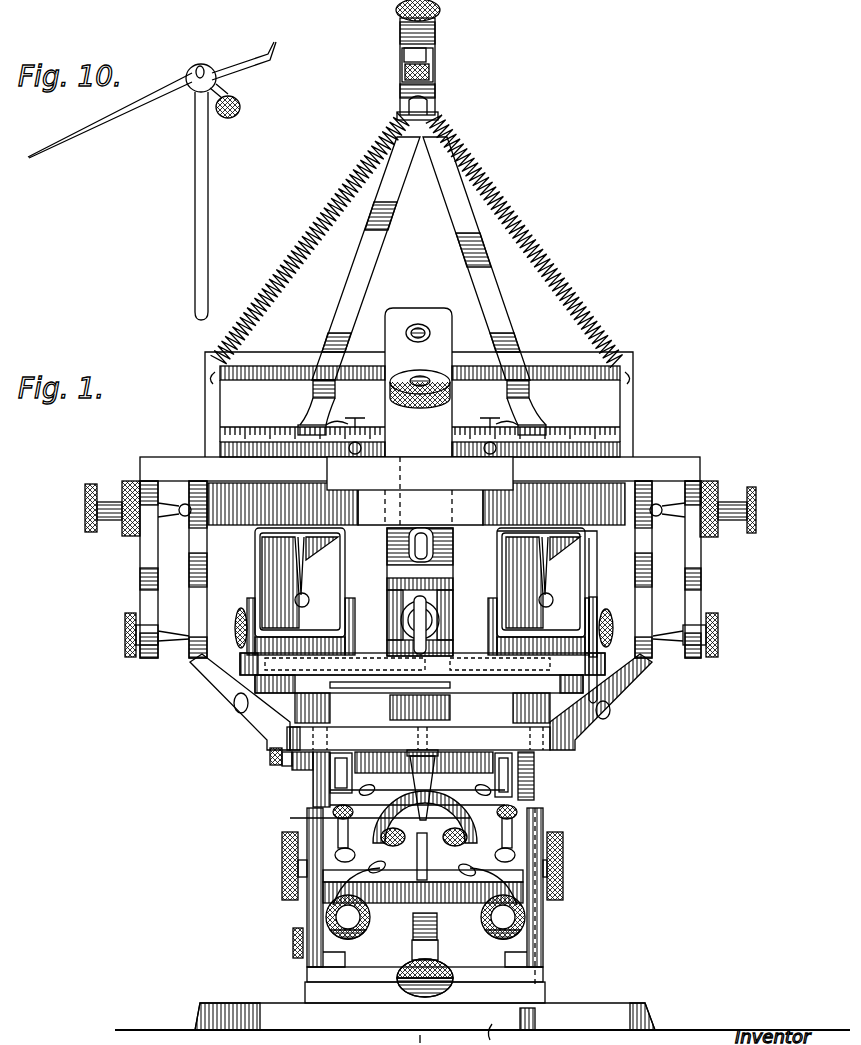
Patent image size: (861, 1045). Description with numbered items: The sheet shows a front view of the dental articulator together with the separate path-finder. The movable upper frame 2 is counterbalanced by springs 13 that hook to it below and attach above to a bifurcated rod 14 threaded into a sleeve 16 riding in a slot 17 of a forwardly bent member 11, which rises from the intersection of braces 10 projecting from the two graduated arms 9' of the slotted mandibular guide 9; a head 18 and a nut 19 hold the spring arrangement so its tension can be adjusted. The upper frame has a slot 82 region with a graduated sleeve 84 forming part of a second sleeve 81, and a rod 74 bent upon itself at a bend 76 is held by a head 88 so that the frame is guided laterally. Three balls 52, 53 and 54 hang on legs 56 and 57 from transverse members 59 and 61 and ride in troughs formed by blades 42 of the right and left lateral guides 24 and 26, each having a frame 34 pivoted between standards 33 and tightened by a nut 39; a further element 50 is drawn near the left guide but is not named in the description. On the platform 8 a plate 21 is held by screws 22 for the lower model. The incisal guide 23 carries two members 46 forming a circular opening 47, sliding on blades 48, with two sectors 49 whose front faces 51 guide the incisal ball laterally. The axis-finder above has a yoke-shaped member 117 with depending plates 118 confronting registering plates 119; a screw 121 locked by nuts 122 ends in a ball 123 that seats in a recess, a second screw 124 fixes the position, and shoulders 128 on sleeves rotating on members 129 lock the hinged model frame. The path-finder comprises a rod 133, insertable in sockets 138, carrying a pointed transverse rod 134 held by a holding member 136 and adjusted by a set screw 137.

In FIG. 1, the upper frame 2 is at (384, 405).
In FIG. 1, the platform 8 is at (455, 702).
In FIG. 1, the mandibular guide 9 is at (442, 620).
In FIG. 1, the arms 9' is at (419, 404).
In FIG. 1, the braces 10 is at (440, 265).
In FIG. 1, the member 11 is at (437, 64).
In FIG. 1, the springs 13 is at (300, 243).
In FIG. 1, the bifurcated rod 14 is at (437, 90).
In FIG. 1, the sleeve 16 is at (437, 40).
In FIG. 1, the slot 17 is at (402, 43).
In FIG. 1, the head 18 is at (398, 12).
In FIG. 1, the nut 19 is at (403, 72).
In FIG. 1, the plate 21 is at (460, 688).
In FIG. 1, the screws 22 is at (250, 686).
In FIG. 1, the incisal guide 23 is at (308, 900).
In FIG. 1, the right lateral guide 24 is at (262, 567).
In FIG. 1, the left lateral guide 26 is at (597, 548).
In FIG. 1, the standards 33 is at (246, 603).
In FIG. 1, the frame 34 is at (340, 565).
In FIG. 1, the nut 39 is at (236, 628).
In FIG. 1, the blades 42 is at (268, 582).
In FIG. 1, the members 46 is at (365, 803).
In FIG. 1, the circular opening 47 is at (515, 820).
In FIG. 1, the blades 48 is at (534, 772).
In FIG. 1, the sectors 49 is at (385, 895).
In FIG. 1, the pendulum 50 is at (549, 575).
In FIG. 1, the front faces 51 is at (365, 833).
In FIG. 1, the ball 52 is at (432, 762).
In FIG. 1, the ball 53 is at (309, 604).
In FIG. 1, the ball 54 is at (500, 558).
In FIG. 1, the leg 56 is at (395, 752).
In FIG. 1, the leg 57 is at (305, 558).
In FIG. 1, the transverse member 59 is at (625, 636).
In FIG. 1, the transverse member 61 is at (268, 510).
In FIG. 1, the rod 74 is at (428, 545).
In FIG. 1, the bend 76 is at (400, 648).
In FIG. 1, the second sleeve 81 is at (450, 636).
In FIG. 1, the slot 82 is at (405, 598).
In FIG. 1, the graduations 84 is at (437, 610).
In FIG. 1, the head 88 is at (452, 392).
In FIG. 1, the yoke shaped member 117 is at (245, 460).
In FIG. 1, the plates 118 is at (142, 552).
In FIG. 1, the registering plates 119 is at (192, 580).
In FIG. 1, the screw 121 is at (108, 522).
In FIG. 1, the nuts 122 is at (132, 478).
In FIG. 1, the ball 123 is at (183, 518).
In FIG. 1, the second screw 124 is at (125, 630).
In FIG. 1, the shoulders 128 is at (432, 436).
In FIG. 1, the members 129 is at (326, 423).
In FIG. 10, the rod 133 is at (200, 186).
In FIG. 10, the transverse rod 134 is at (132, 118).
In FIG. 10, the holding member 136 is at (212, 70).
In FIG. 10, the set screw 137 is at (238, 112).
In FIG. 1, the sockets 138 is at (246, 713).